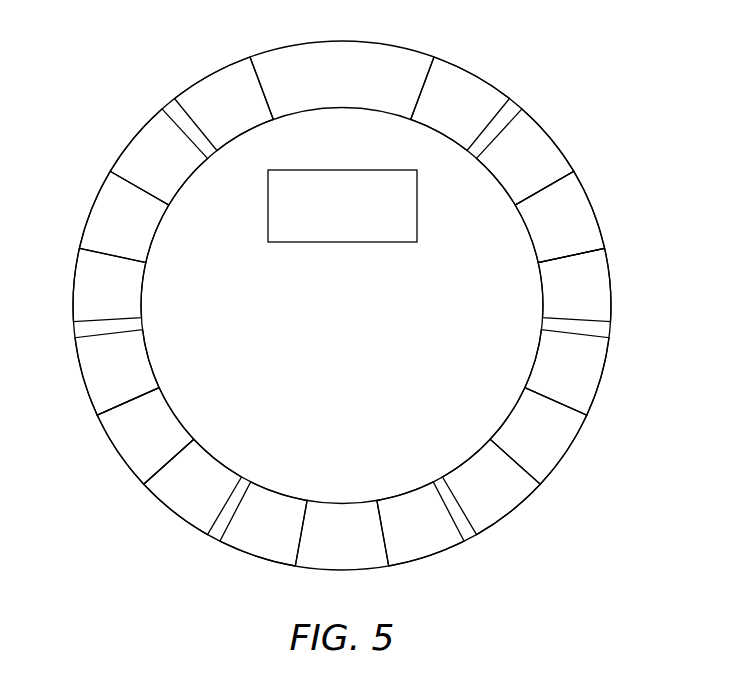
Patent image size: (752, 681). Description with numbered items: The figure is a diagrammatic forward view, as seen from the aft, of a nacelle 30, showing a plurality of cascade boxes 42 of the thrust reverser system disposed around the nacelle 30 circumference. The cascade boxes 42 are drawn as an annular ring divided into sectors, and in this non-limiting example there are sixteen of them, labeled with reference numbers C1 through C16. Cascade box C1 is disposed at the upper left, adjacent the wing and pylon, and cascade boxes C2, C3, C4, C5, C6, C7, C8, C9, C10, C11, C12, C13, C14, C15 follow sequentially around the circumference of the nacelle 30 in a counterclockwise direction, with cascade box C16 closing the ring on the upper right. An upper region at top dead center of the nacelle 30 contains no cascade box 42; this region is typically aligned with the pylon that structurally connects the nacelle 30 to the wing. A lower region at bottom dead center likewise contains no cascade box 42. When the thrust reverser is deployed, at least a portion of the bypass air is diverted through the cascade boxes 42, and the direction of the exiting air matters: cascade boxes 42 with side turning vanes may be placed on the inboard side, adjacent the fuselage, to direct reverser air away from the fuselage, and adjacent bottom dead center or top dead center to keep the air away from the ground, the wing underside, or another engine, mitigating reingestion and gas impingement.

The nacelle 30 is at (96, 123).
The cascade boxes 42 is at (555, 157).
The cascade box C1 is at (224, 104).
The cascade box C2 is at (158, 157).
The cascade box C3 is at (123, 216).
The cascade box C4 is at (109, 284).
The cascade box C5 is at (117, 373).
The cascade box C6 is at (145, 436).
The cascade box C7 is at (193, 486).
The cascade box C8 is at (263, 524).
The cascade box C9 is at (420, 524).
The cascade box C10 is at (492, 486).
The cascade box C11 is at (538, 436).
The cascade box C12 is at (567, 373).
The cascade box C13 is at (574, 284).
The cascade box C14 is at (559, 216).
The cascade box C15 is at (525, 157).
The cascade box C16 is at (460, 104).